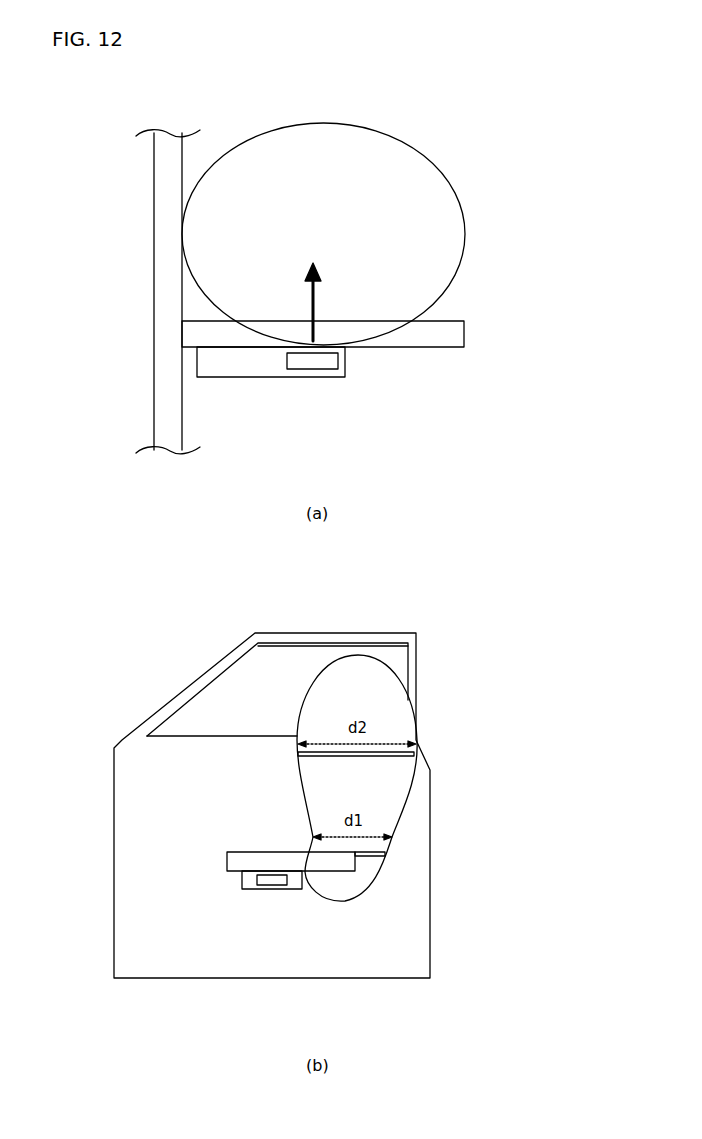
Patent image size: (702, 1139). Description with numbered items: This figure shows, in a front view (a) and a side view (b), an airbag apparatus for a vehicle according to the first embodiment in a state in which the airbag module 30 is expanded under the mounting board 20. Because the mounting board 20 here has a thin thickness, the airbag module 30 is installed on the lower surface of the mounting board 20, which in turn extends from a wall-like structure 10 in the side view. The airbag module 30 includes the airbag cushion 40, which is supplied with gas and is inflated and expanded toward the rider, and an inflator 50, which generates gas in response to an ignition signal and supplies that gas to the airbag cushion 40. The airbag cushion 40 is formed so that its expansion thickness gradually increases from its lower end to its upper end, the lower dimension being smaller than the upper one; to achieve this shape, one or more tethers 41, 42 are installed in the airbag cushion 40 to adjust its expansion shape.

The vehicle body panel 10 is at (153, 242).
The mounting board 20 is at (464, 332).
The airbag module 30 is at (350, 367).
The airbag cushion 40 is at (240, 137).
The inflator 50 is at (315, 369).
The tether 41 is at (383, 757).
The tether 42 is at (365, 873).